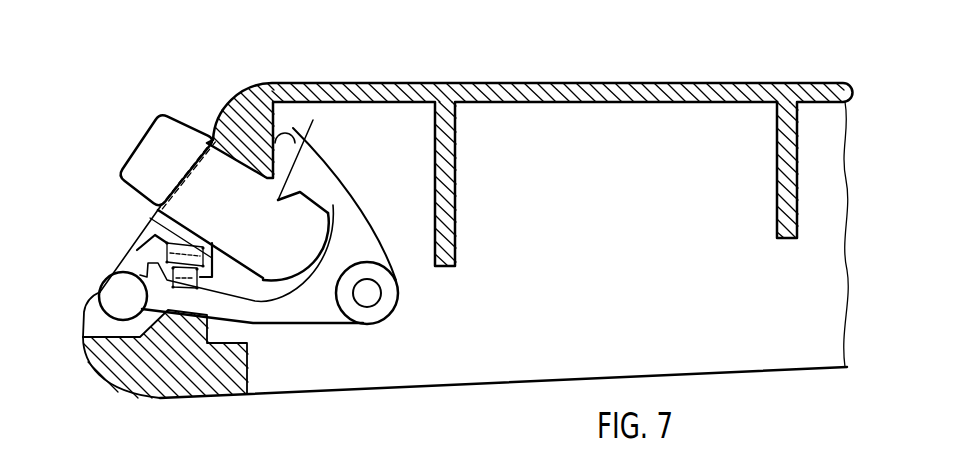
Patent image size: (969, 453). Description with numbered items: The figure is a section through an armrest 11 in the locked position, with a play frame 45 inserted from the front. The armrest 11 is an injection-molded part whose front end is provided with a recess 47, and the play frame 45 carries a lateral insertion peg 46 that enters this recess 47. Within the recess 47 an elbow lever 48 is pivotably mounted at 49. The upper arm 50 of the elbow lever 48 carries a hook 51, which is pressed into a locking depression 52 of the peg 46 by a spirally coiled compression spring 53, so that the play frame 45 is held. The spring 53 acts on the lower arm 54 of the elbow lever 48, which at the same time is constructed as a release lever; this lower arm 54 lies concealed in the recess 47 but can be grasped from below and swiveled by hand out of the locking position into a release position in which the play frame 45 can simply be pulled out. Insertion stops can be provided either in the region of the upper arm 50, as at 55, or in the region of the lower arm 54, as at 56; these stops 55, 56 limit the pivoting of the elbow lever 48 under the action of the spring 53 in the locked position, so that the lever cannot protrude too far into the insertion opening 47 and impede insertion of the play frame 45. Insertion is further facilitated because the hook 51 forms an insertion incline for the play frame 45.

The armrest 11 is at (643, 85).
The play frame 45 is at (140, 132).
The insertion peg 46 is at (210, 167).
The recess 47 is at (193, 221).
The elbow lever 48 is at (370, 228).
The pivot 49 is at (368, 295).
The upper arm 50 is at (338, 193).
The hook 51 is at (313, 120).
The locking depression 52 is at (280, 207).
The spirally coiled compression spring 53 is at (151, 221).
The lower arm 54 is at (95, 368).
The insertion stop 55 is at (297, 130).
The insertion stop 56 is at (170, 317).